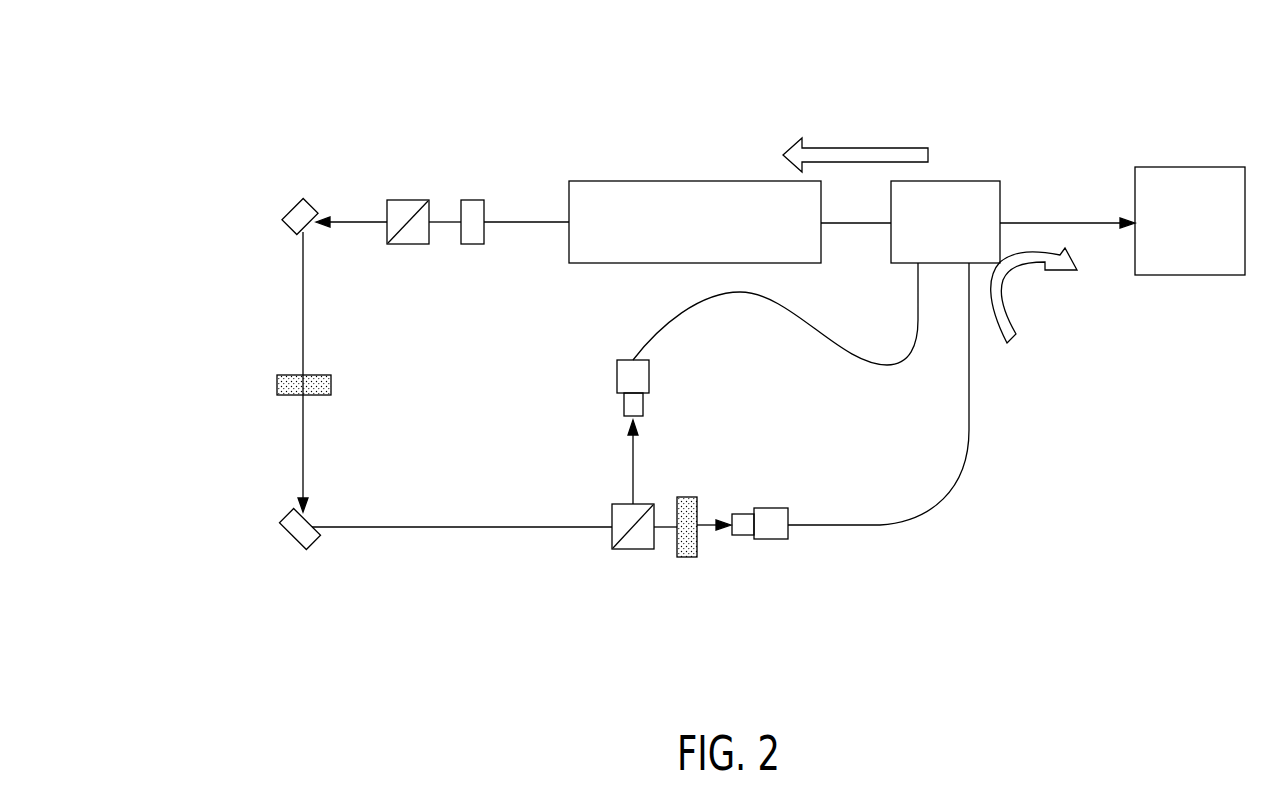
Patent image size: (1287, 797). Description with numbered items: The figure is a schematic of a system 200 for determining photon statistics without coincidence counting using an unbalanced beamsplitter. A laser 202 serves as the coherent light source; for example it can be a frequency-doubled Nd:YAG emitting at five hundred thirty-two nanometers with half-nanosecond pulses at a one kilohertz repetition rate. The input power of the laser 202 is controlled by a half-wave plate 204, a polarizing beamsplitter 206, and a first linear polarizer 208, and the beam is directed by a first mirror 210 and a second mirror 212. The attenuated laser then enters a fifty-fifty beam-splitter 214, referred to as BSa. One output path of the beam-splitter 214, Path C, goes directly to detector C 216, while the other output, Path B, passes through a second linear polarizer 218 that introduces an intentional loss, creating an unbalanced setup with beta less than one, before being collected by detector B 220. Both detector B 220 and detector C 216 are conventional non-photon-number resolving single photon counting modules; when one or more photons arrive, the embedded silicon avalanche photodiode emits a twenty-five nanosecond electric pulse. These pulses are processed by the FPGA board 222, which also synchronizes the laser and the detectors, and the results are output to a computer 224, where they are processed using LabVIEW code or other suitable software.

The system 200 is at (183, 85).
The laser 202 is at (670, 180).
The half-wave plate 204 is at (475, 245).
The polarizing beamsplitter 206 is at (431, 163).
The first linear polarizer 208 is at (332, 385).
The first mirror 210 is at (283, 222).
The second mirror 212 is at (293, 541).
The 50:50 beam-splitter 214 is at (636, 552).
The detector C 216 is at (649, 375).
The second linear polarizer 218 is at (687, 560).
The detector B 220 is at (773, 542).
The FPGA board 222 is at (947, 180).
The computer 224 is at (1188, 166).